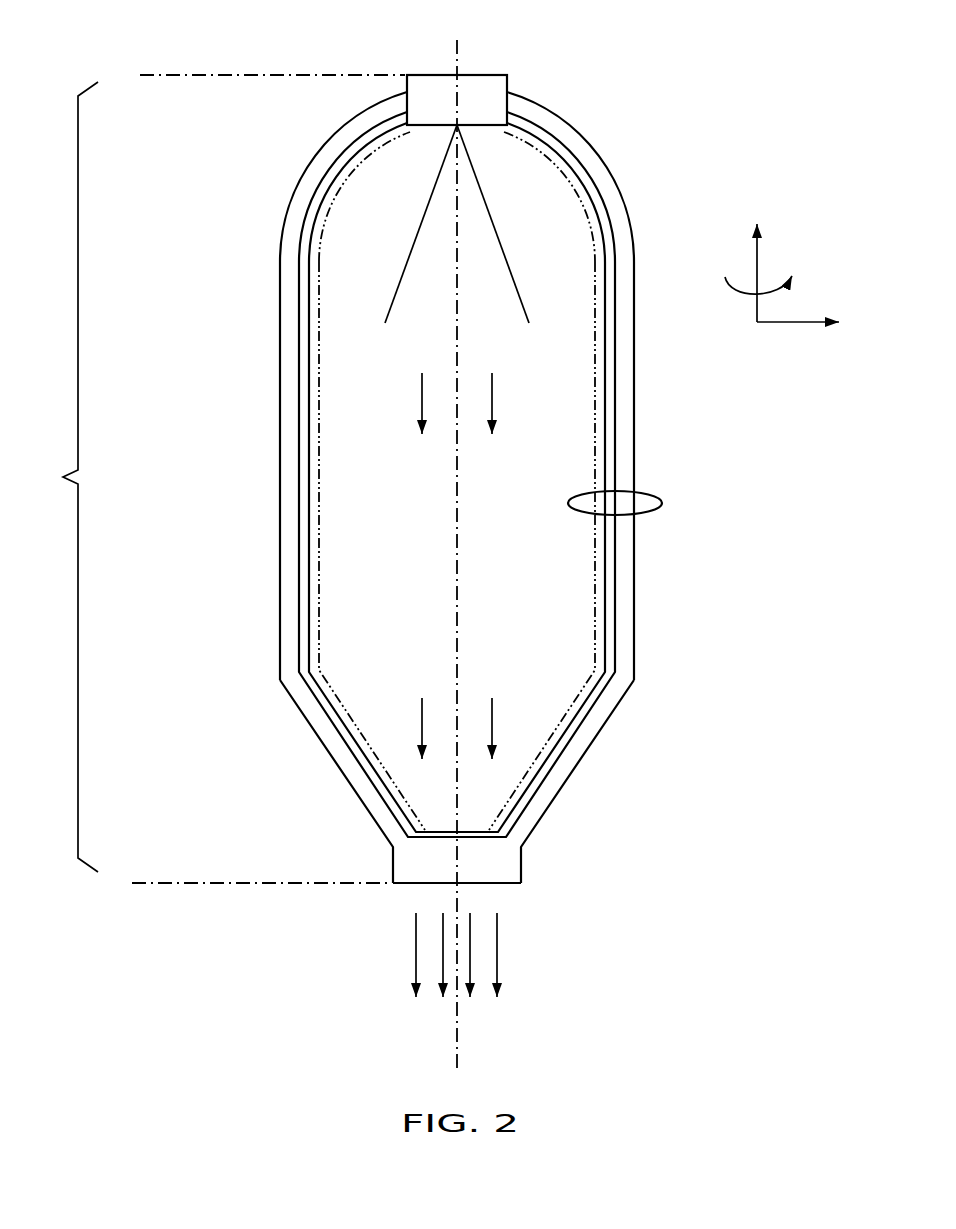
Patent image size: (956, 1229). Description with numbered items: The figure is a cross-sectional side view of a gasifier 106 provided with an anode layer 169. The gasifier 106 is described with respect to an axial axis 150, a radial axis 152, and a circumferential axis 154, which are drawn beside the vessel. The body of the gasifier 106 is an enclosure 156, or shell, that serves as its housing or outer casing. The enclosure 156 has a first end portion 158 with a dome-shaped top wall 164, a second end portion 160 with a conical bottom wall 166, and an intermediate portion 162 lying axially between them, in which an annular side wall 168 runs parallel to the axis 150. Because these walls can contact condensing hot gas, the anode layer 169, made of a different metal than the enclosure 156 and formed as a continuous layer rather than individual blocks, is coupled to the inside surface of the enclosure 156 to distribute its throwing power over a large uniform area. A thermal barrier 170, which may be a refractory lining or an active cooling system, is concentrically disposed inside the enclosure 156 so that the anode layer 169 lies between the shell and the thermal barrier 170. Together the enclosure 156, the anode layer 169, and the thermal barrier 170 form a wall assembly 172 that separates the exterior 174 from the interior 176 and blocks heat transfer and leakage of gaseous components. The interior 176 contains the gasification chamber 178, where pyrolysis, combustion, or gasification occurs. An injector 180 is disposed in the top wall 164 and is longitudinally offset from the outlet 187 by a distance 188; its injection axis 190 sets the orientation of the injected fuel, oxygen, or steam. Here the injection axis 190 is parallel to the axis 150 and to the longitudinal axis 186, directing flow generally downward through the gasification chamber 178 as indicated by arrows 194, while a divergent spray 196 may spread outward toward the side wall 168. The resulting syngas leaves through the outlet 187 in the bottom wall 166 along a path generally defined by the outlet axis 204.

The gasifier 106 is at (483, 50).
The axial axis 150 is at (780, 294).
The radial axis 152 is at (800, 325).
The circumferential axis 154 is at (740, 297).
The enclosure 156 is at (641, 247).
The first end portion 158 is at (302, 152).
The second end portion 160 is at (286, 760).
The intermediate portion 162 is at (266, 452).
The top wall 164 is at (355, 132).
The bottom wall 166 is at (360, 780).
The side wall 168 is at (290, 423).
The anode layer 169 is at (312, 215).
The thermal barrier 170 is at (312, 305).
The wall assembly 172 is at (650, 492).
The exterior 174 is at (723, 638).
The interior 176 is at (504, 650).
The gasification chamber 178 is at (538, 356).
The injector 180 is at (483, 88).
The longitudinal axis 186 is at (455, 657).
The outlet 187 is at (507, 885).
The distance 188 is at (58, 477).
The injection axis 190 is at (447, 183).
The arrows 194 is at (420, 395).
The divergent spray 196 is at (405, 260).
The outlet axis 204 is at (457, 863).